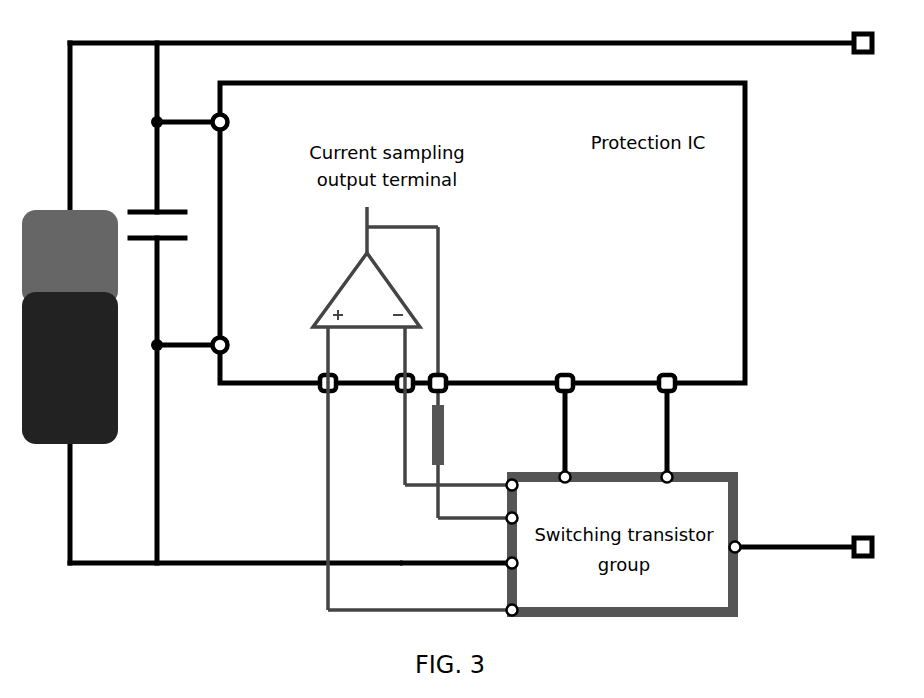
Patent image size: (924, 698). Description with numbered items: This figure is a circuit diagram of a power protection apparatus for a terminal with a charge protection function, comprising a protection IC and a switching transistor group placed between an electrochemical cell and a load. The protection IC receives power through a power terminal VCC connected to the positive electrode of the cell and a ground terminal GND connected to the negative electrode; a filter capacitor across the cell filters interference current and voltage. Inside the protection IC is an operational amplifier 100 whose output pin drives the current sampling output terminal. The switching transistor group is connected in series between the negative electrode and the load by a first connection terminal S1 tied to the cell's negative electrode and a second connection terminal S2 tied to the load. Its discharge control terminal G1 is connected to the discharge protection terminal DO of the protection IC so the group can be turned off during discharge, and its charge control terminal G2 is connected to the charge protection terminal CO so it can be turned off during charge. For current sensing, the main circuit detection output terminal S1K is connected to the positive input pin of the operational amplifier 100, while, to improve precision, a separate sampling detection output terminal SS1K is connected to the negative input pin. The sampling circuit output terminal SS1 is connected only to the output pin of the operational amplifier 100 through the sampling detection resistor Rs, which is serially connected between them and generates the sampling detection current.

The operational amplifier 100 is at (363, 313).
The power terminal VCC is at (214, 122).
The ground terminal GND is at (216, 345).
The discharge protection terminal DO is at (565, 408).
The charge protection terminal CO is at (667, 408).
The discharge control terminal G1 is at (584, 466).
The charge control terminal G2 is at (650, 466).
The sampling detection resistor Rs is at (454, 435).
The sampling detection output terminal SS1K is at (461, 409).
The sampling circuit output terminal SS1 is at (478, 494).
The first connection terminal S1 is at (459, 552).
The detection output terminal S1K is at (423, 471).
The second connection terminal S2 is at (801, 538).